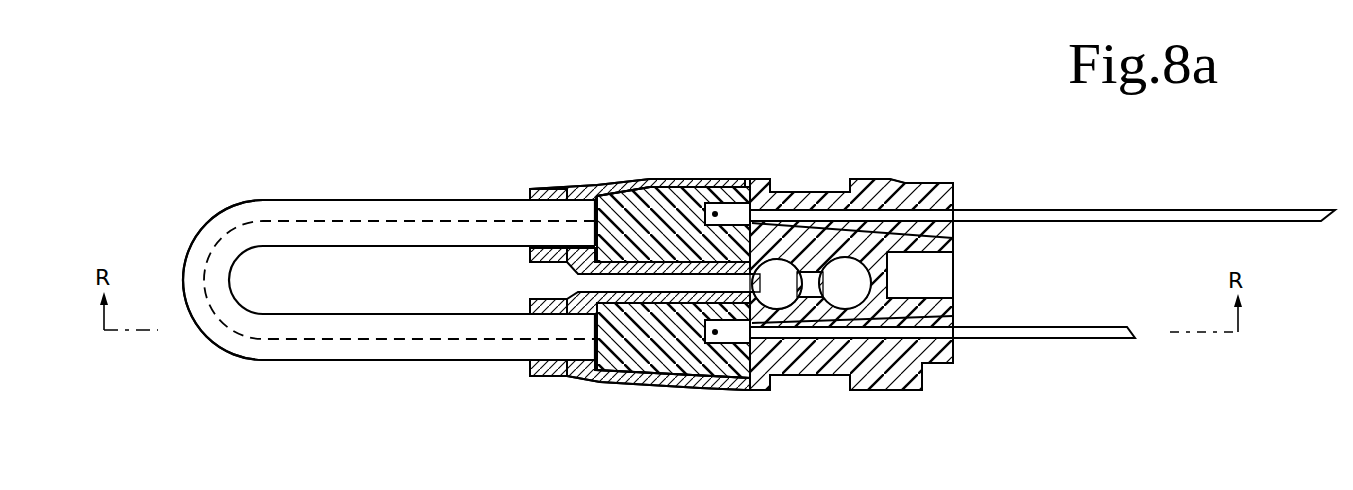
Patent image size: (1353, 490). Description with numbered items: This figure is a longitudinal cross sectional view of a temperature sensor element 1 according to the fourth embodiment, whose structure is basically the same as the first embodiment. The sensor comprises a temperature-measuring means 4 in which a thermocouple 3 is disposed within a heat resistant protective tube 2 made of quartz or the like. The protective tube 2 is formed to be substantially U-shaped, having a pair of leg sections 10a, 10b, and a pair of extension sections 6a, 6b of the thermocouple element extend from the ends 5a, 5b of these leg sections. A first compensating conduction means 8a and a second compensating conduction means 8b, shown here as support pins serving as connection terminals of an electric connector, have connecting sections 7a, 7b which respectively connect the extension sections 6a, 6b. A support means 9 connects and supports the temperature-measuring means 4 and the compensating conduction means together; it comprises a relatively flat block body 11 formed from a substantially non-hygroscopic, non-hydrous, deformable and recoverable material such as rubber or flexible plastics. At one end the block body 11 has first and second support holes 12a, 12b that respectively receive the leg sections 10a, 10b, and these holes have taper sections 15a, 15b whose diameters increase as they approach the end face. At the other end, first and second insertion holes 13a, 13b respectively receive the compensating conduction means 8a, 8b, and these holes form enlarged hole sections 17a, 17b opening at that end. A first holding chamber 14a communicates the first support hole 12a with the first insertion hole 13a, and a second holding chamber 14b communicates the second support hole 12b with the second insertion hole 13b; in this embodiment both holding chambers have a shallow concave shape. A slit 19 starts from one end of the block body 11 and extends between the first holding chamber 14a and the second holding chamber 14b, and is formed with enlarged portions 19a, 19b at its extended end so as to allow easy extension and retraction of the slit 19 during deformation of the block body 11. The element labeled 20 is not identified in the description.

The temperature sensor element 1 is at (948, 160).
The protective tube 2 is at (275, 200).
The thermocouple 3 is at (300, 342).
The temperature-measuring means 4 is at (217, 349).
The end of leg section 5a is at (572, 189).
The end of leg section 5b is at (575, 378).
The extension section 6a is at (667, 187).
The extension section 6b is at (660, 390).
The connecting section 7a is at (735, 203).
The connecting section 7b is at (735, 345).
The first compensating conduction means 8a is at (1179, 208).
The second compensating conduction means 8b is at (1080, 341).
The support means 9 is at (750, 324).
The block body 11 is at (913, 391).
The leg section 10a is at (381, 200).
The leg section 10b is at (392, 362).
The first support hole 12a is at (540, 190).
The second support hole 12b is at (538, 380).
The first insertion hole 13a is at (790, 221).
The second insertion hole 13b is at (808, 345).
The first holding chamber 14a is at (700, 186).
The second holding chamber 14b is at (705, 390).
The taper section 15a is at (532, 193).
The taper section 15b is at (530, 377).
The enlarged hole section 17a is at (895, 185).
The enlarged hole section 17b is at (875, 392).
The slit 19 is at (583, 282).
The enlarged portion 19a is at (777, 310).
The enlarged portion 19b is at (840, 270).
The seal 20 is at (620, 186).